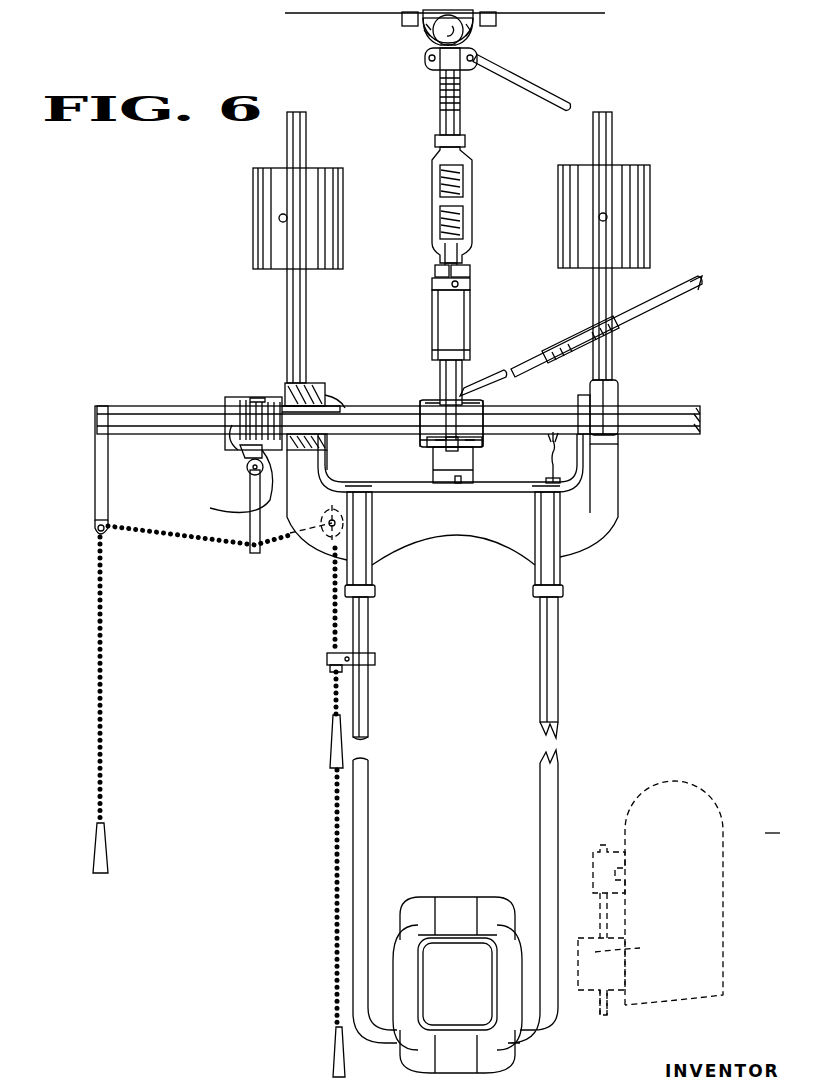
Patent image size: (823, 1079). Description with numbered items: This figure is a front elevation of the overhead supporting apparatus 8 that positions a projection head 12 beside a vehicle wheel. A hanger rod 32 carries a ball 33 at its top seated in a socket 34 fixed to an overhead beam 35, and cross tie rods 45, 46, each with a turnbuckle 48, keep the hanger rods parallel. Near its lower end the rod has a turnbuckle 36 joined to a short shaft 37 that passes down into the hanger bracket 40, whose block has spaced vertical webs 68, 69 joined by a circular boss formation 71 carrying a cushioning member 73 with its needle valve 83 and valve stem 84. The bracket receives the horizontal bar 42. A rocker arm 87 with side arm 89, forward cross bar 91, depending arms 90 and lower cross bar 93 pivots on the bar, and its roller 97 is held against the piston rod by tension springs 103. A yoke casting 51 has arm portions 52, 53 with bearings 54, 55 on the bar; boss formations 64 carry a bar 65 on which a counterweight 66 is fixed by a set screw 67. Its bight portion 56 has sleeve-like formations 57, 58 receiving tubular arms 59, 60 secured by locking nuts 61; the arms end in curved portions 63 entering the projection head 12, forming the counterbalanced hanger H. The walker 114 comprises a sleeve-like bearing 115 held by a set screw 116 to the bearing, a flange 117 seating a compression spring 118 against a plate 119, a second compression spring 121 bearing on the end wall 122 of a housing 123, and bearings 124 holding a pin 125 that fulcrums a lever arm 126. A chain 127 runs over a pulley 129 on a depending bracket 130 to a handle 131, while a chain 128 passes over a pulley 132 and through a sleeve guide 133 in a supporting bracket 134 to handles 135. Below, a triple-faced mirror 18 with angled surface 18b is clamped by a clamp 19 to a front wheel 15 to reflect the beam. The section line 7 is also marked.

The overhead beam 35 is at (365, 13).
The socket 34 is at (470, 38).
The ball 33 is at (440, 34).
The hanger rod 32 is at (440, 76).
The cross tie rod 46 is at (548, 96).
The turnbuckle 36 is at (472, 177).
The short shaft 37 is at (440, 220).
The section line 7 is at (470, 255).
The valve stem 84 is at (435, 268).
The cushioning member 73 is at (424, 287).
The needle valve 83 is at (458, 284).
The circular boss formation 71 is at (440, 315).
The vertical web 68 is at (440, 393).
The vertical web 69 is at (468, 380).
The hanger bracket 40 is at (420, 381).
The tension spring 103 is at (483, 410).
The rocker arm 87 is at (490, 450).
The side arm 89 is at (427, 440).
The cross bar 91 is at (446, 447).
The roller 97 is at (453, 465).
The depending arm 90 is at (473, 470).
The cross bar 93 is at (458, 483).
The bight portion 56 is at (412, 488).
The horizontal bar 42 is at (700, 415).
The supporting apparatus 8 is at (670, 406).
The bar 65 is at (292, 300).
The counterweight 66 is at (253, 227).
The set screw 67 is at (285, 215).
The turnbuckle 48 is at (590, 332).
The cross tie rod 45 is at (688, 280).
The boss formation 64 is at (618, 388).
The bearing 55 is at (576, 402).
The bearing 54 is at (320, 388).
The set screw 116 is at (332, 398).
The sleeve-like bearing 115 is at (340, 408).
The end wall 122 is at (225, 400).
The compression spring 121 is at (240, 400).
The plate 119 is at (250, 400).
The compression spring 118 is at (253, 400).
The flange 117 is at (270, 400).
The housing 123 is at (232, 432).
The walker 114 is at (228, 459).
The bearing 124 is at (247, 470).
The pin 125 is at (262, 468).
The lever arm 126 is at (252, 522).
The depending bracket 130 is at (95, 484).
The pulley 129 is at (95, 530).
The chain 127 is at (100, 585).
The handle 131 is at (97, 848).
The pulley 132 is at (316, 514).
The chain 128 is at (332, 590).
The supporting bracket 134 is at (375, 660).
The sleeve guide 133 is at (327, 650).
The handle 135 is at (330, 742).
The yoke casting 51 is at (618, 505).
The arm portion 52 is at (308, 464).
The arm portion 53 is at (604, 462).
The hanger H is at (592, 502).
The sleeve-like formation 57 is at (372, 520).
The sleeve-like formation 58 is at (535, 518).
The locking nut 61 is at (375, 590).
The tubular arm 59 is at (368, 698).
The tubular arm 60 is at (540, 696).
The curved portion 63 is at (385, 1040).
The projection head 12 is at (447, 898).
The front wheel 15 is at (712, 815).
The clamp 19 is at (593, 870).
The triple-faced mirror 18 is at (622, 976).
The angularly disposed surface 18b is at (592, 995).